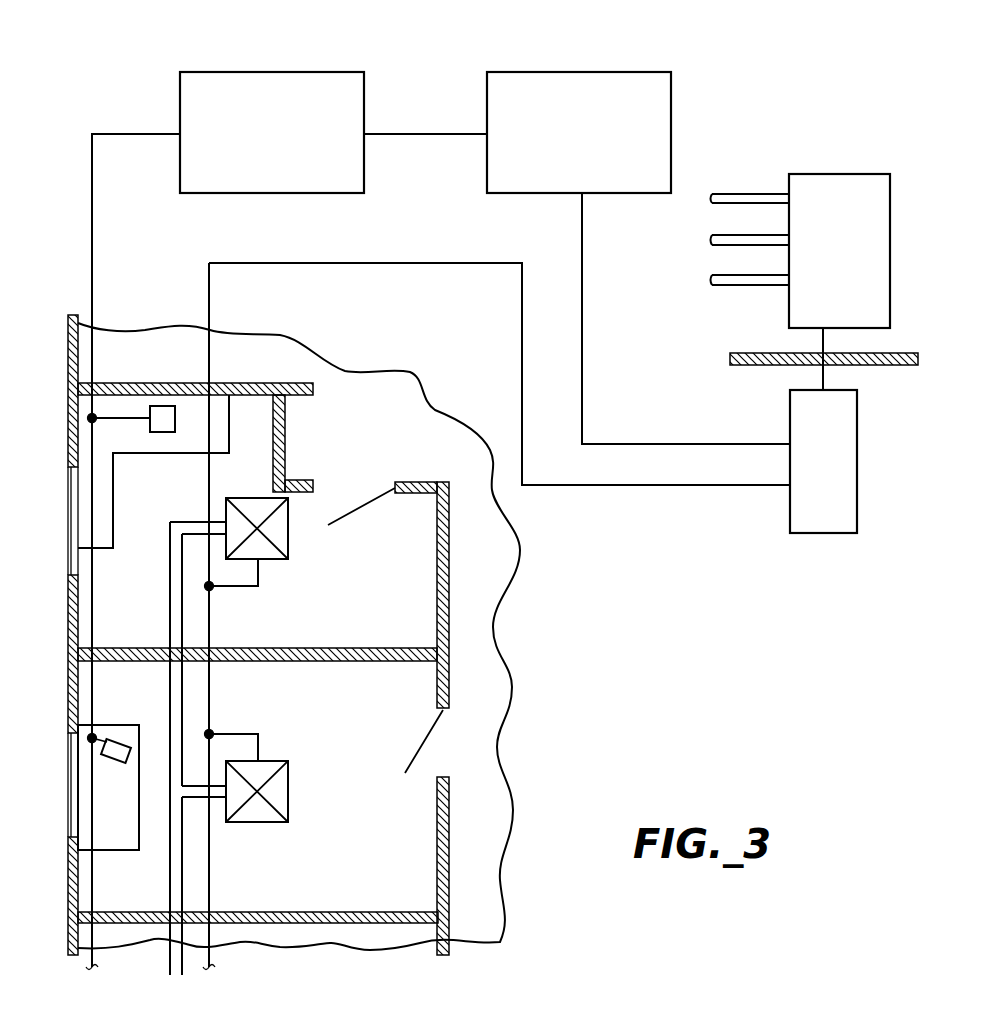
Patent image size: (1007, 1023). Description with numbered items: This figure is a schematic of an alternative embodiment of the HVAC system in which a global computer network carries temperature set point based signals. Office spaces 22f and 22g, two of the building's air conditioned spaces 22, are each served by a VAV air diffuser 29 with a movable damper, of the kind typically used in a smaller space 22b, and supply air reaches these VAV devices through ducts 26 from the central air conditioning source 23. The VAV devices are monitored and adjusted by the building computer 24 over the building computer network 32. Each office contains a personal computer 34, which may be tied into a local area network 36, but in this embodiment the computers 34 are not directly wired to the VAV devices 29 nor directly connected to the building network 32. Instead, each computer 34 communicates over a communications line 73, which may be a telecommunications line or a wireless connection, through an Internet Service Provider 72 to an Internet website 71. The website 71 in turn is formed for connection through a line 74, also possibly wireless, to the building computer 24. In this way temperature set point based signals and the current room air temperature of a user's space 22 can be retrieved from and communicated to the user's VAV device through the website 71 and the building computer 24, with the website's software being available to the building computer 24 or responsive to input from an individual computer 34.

The offices, rooms or spaces 22 is at (100, 625).
The space 22b is at (340, 900).
The office space 22f is at (257, 638).
The office space 22g is at (383, 863).
The central source 23 is at (831, 162).
The monitoring station / building computer 24 is at (809, 547).
The ducts 26 is at (758, 275).
The VAV air diffusers 29 is at (288, 527).
The building computer network 32 is at (522, 332).
The personal computers 34 is at (157, 405).
The local area network 36 is at (119, 418).
The website 71 is at (603, 71).
The Internet Service Provider 72 is at (288, 71).
The communications line 73 is at (148, 133).
The line 74 is at (582, 268).